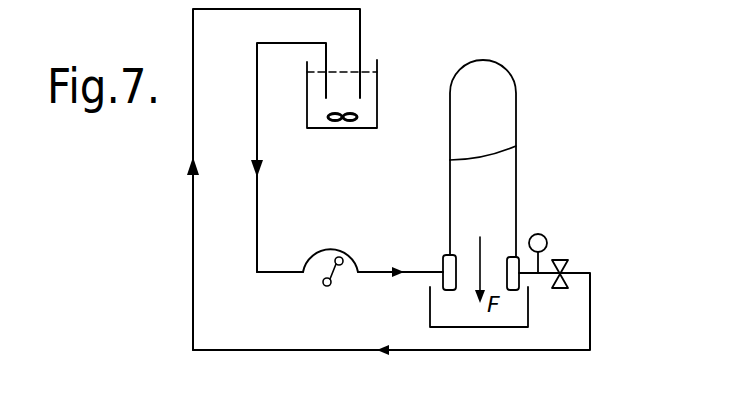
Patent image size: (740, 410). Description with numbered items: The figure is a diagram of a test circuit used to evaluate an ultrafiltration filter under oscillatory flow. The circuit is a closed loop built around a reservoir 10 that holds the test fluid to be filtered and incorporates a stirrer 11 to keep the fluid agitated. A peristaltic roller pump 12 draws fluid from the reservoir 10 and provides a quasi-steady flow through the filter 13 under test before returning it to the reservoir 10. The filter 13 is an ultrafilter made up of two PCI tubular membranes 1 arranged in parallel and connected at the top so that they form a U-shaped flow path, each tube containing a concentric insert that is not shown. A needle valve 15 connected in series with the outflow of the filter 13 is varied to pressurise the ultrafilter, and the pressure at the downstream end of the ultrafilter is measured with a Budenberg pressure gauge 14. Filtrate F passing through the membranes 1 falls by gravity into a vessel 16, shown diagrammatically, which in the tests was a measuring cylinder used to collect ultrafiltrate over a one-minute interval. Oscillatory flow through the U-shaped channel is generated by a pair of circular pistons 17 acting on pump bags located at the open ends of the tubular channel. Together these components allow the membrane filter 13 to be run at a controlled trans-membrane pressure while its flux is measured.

The tubular membrane 1 is at (522, 147).
The reservoir 10 is at (377, 78).
The stirrer 11 is at (351, 121).
The peristaltic roller pump 12 is at (339, 232).
The filter 13 is at (438, 195).
The pressure gauge 14 is at (545, 235).
The needle valve 15 is at (563, 259).
The vessel 16 is at (528, 315).
The circular pistons 17 is at (443, 266).